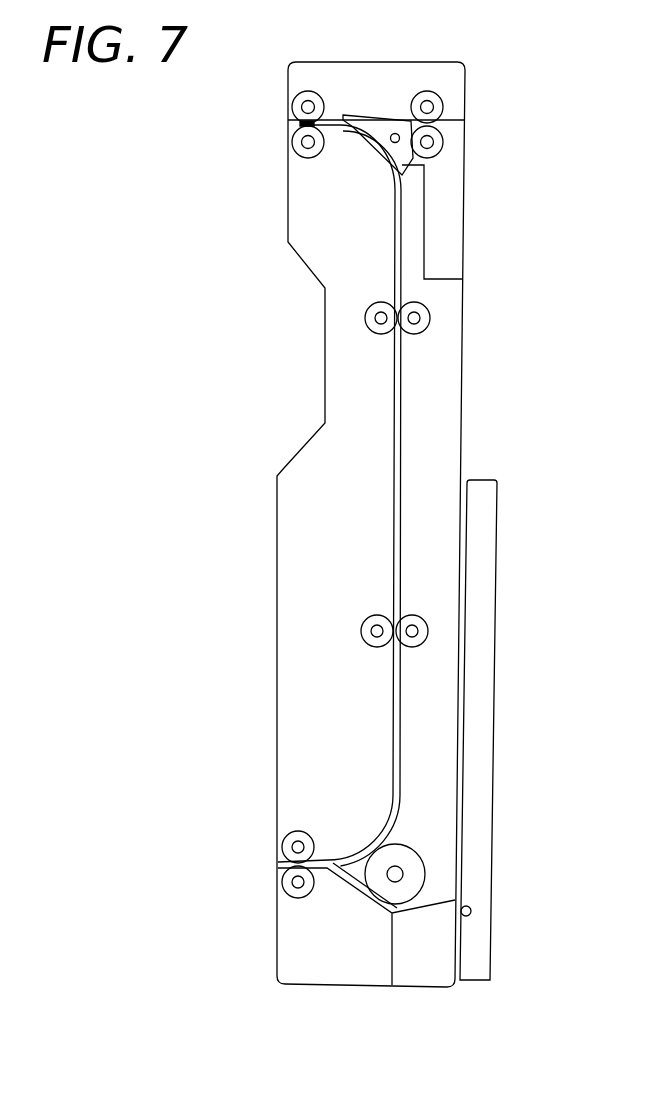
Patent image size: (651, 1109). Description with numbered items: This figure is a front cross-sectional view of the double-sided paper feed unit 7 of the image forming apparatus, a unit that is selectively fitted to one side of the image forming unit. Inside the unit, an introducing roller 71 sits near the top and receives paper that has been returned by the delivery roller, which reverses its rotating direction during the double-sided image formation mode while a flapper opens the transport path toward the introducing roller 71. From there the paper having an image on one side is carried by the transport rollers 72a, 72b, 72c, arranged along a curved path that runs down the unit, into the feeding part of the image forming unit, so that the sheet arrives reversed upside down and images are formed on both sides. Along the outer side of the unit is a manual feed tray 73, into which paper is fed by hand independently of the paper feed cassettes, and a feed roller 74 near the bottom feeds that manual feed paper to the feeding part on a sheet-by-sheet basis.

The double-sided paper feed unit 7 is at (425, 62).
The introducing roller 71 is at (301, 156).
The transport roller 72a is at (430, 321).
The transport roller 72b is at (410, 614).
The transport roller 72c is at (300, 832).
The manual feed tray 73 is at (493, 680).
The feed roller 74 is at (410, 847).